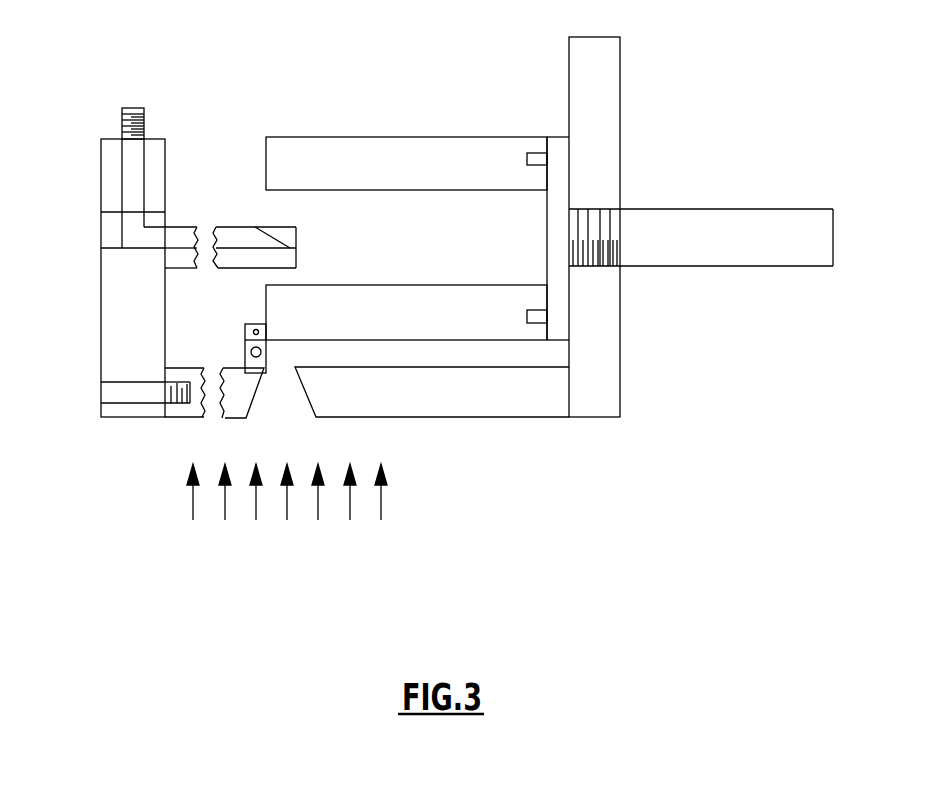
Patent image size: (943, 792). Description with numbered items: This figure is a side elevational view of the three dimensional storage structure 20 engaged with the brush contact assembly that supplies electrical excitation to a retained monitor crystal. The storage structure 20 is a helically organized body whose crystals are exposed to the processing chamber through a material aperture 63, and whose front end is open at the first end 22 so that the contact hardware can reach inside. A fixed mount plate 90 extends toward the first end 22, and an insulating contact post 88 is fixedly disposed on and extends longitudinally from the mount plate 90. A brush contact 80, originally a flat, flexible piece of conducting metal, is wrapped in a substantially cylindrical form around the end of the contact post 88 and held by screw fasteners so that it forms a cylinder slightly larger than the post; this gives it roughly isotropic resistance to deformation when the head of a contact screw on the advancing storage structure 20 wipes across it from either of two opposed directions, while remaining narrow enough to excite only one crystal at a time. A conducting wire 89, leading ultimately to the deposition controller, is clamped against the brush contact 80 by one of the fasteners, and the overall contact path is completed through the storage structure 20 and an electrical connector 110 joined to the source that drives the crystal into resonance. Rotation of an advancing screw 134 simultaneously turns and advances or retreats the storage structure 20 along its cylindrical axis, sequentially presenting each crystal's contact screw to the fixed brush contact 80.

The three dimensional storage structure 20 is at (432, 136).
The first end 22 is at (266, 136).
The material aperture 63 is at (287, 401).
The brush contact 80 is at (280, 231).
The insulating contact post 88 is at (227, 227).
The conducting wire 89 is at (182, 247).
The fixed mount plate 90 is at (110, 301).
The electrical connector 110 is at (122, 108).
The advancing screw 134 is at (727, 250).